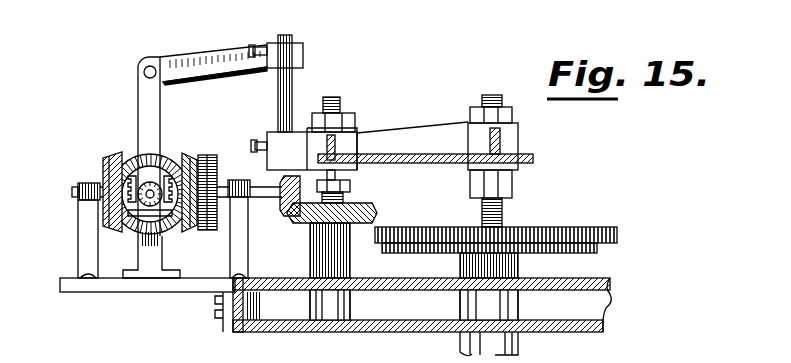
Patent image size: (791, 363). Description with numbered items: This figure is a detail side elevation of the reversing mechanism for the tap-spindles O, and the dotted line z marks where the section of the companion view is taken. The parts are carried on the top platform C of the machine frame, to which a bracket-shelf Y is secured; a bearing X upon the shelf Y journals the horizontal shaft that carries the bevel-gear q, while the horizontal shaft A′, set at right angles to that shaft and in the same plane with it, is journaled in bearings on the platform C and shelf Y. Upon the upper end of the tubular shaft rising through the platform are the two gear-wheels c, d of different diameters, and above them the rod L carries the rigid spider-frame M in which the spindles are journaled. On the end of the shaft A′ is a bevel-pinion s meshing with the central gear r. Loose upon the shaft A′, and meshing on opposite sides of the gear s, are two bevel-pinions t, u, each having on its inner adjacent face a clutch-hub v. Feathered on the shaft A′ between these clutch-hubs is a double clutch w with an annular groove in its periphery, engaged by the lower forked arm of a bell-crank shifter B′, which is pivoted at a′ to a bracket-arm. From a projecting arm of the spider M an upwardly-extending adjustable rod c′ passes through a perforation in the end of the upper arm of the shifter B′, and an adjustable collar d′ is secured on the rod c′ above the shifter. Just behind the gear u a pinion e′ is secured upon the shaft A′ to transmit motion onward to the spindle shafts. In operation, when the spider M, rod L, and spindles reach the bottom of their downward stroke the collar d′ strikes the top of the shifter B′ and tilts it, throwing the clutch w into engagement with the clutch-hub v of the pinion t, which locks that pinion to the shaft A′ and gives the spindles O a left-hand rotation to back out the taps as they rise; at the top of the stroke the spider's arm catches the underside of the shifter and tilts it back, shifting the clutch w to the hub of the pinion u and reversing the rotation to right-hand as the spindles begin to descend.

The dotted line z is at (150, 330).
The top platform C is at (413, 305).
The bearing X is at (118, 292).
The bracket-shelf Y is at (200, 292).
The bevel-pinion s is at (280, 186).
The bevel-pinion t is at (106, 160).
The clutch-hub v is at (132, 158).
The double clutch w is at (168, 226).
The bevel-gear q is at (132, 228).
The bevel-pinion u is at (210, 156).
The bell-crank shifter B' is at (135, 167).
The pivot a' is at (205, 58).
The adjustable collar d' is at (287, 41).
The adjustable rod c' is at (298, 83).
The pinion e' is at (246, 155).
The tap-spindle O is at (345, 106).
The spider-frame M is at (452, 130).
The horizontal shaft A' is at (277, 204).
The central gear r is at (366, 208).
The rod L is at (516, 208).
The gear-wheel c is at (496, 225).
The gear-wheel d is at (471, 304).